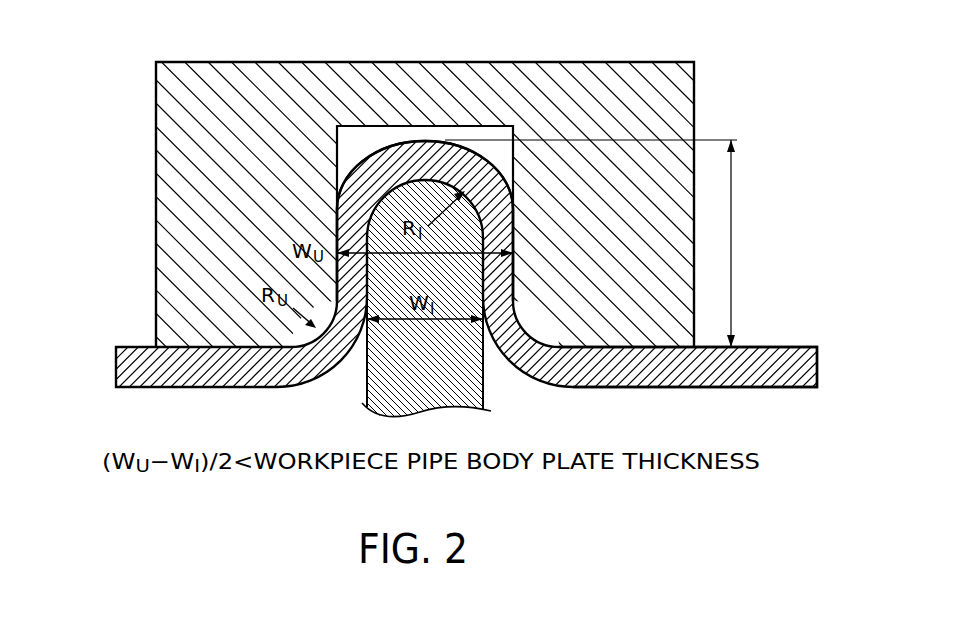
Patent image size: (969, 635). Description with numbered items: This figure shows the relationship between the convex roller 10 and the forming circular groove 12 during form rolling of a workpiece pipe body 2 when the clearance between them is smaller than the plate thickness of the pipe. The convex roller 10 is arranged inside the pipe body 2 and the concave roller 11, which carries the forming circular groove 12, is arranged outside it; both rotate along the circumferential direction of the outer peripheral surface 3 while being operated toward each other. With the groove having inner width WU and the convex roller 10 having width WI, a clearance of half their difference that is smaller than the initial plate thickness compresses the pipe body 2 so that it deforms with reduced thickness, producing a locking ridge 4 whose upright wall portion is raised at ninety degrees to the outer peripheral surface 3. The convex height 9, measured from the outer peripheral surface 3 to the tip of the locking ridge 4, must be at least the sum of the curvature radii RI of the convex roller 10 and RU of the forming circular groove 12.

The workpiece pipe body 2 is at (678, 388).
The outer peripheral surface 3 is at (787, 348).
The locking ridge 4 is at (346, 193).
The convex height 9 is at (731, 206).
The convex roller 10 is at (480, 377).
The concave roller 11 is at (675, 99).
The forming circular groove 12 is at (360, 135).